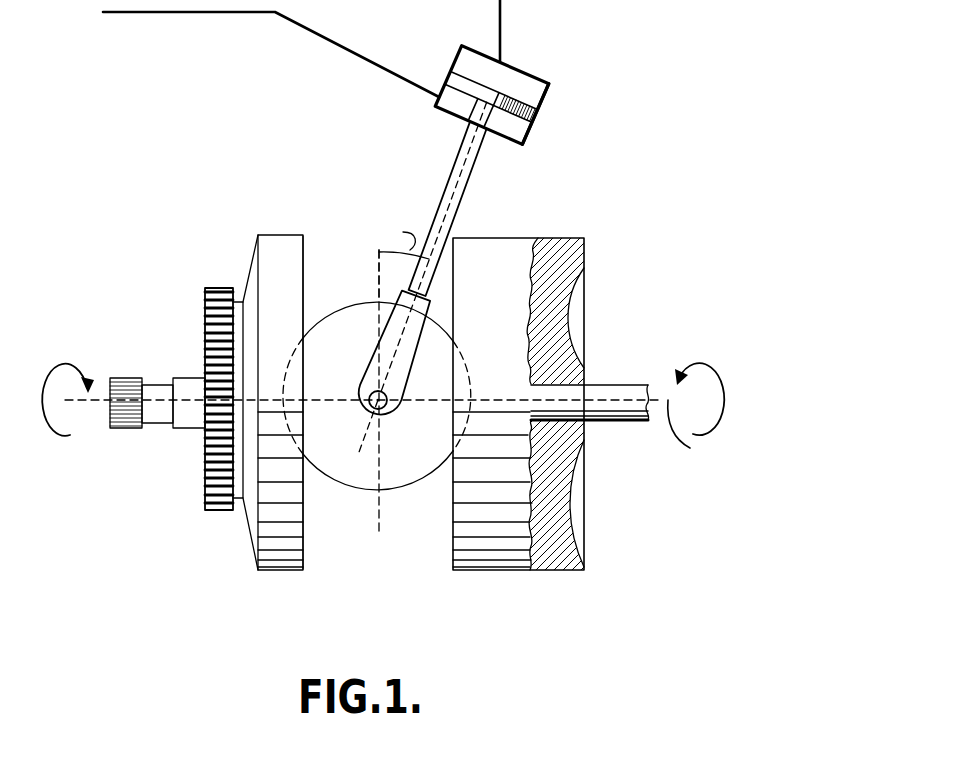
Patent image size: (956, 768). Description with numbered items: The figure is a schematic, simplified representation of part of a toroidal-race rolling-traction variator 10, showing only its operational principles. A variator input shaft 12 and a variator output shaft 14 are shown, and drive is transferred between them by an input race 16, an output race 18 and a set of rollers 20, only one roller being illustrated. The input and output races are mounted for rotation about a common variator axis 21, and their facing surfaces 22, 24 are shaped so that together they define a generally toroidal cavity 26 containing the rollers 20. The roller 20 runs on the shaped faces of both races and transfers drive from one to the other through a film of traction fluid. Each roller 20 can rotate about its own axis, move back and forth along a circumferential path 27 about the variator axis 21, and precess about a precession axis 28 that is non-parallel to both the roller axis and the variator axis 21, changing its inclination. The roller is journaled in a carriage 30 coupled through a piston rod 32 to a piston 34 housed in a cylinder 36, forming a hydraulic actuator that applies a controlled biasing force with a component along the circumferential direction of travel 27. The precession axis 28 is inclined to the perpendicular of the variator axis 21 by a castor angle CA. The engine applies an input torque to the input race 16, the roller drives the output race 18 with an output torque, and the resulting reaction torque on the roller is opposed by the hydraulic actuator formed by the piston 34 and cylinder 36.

The variator 10 is at (214, 524).
The variator input shaft 12 is at (158, 383).
The variator output shaft 14 is at (590, 422).
The input race 16 is at (280, 233).
The output race 18 is at (530, 572).
The roller 20 is at (433, 458).
The variator axis 21 is at (723, 414).
The facing surface of input race 22 is at (305, 492).
The facing surface of output race 24 is at (450, 491).
The toroidal cavity 26 is at (393, 536).
The circumferential path 27 is at (382, 246).
The precession axis 28 is at (457, 214).
The carriage 30 is at (362, 308).
The piston rod 32 is at (441, 203).
The piston 34 is at (487, 85).
The cylinder 36 is at (536, 125).
The castor angle CA is at (404, 230).